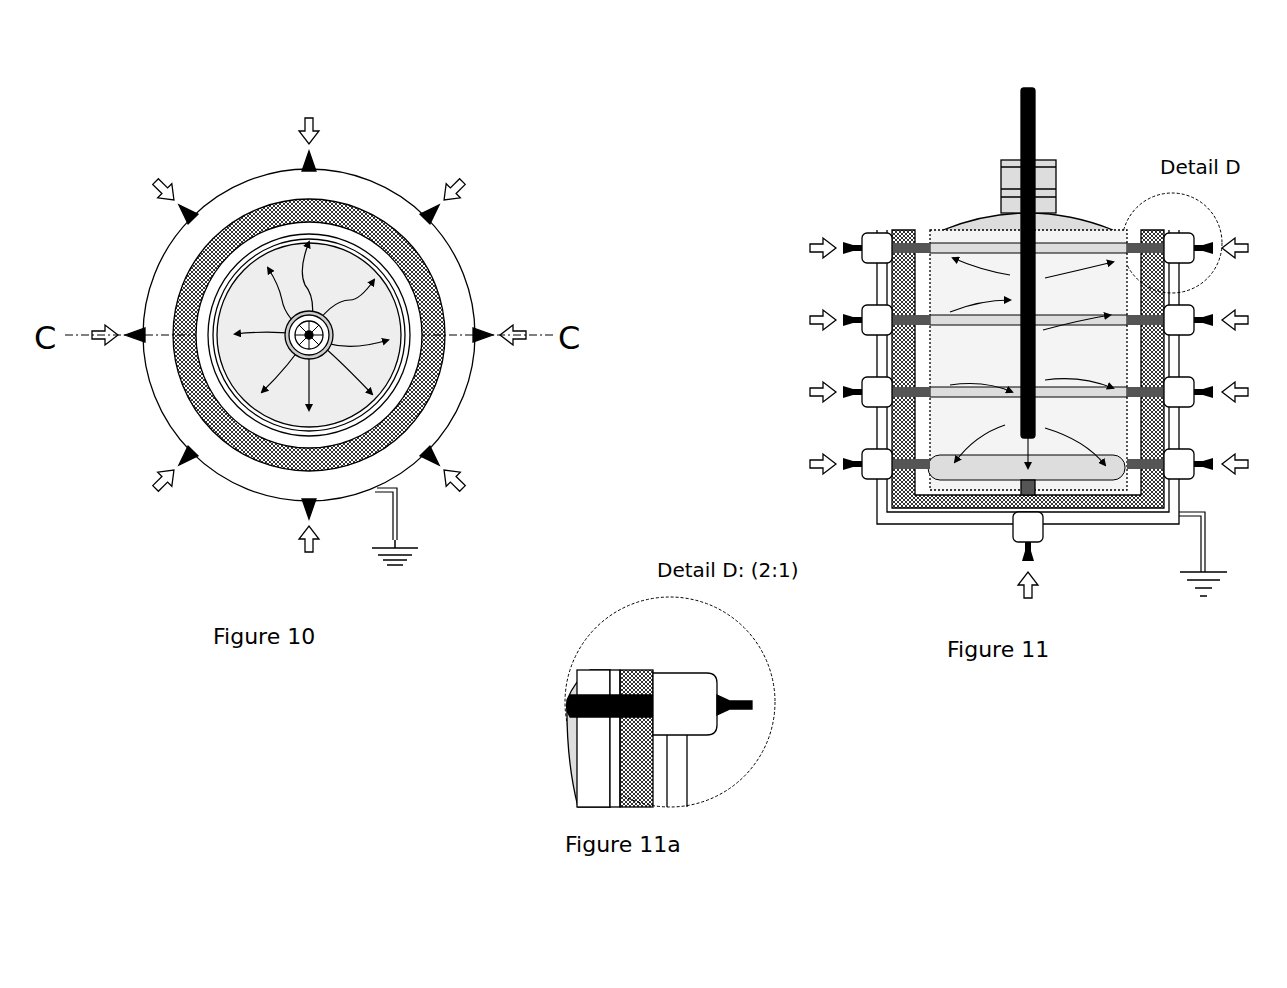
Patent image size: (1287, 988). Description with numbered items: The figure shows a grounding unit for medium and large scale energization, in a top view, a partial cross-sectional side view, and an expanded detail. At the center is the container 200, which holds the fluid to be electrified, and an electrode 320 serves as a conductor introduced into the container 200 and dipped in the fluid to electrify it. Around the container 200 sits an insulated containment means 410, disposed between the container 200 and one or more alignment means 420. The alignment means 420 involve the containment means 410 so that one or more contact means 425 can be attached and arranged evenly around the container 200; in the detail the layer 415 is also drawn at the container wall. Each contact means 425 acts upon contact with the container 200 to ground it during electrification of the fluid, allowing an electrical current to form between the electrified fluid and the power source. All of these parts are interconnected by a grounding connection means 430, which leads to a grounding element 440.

In FIG. 10, the container 200 is at (378, 304).
In FIG. 11, the container 200 is at (1057, 224).
In FIG. 11A, the container 200 is at (569, 697).
In FIG. 11, the electrode 320 is at (1020, 100).
In FIG. 10, the containment means 410 is at (352, 214).
In FIG. 11, the containment means 410 is at (903, 228).
In FIG. 11A, the containment means 410 is at (640, 668).
In FIG. 11A, the vessel wall liner 415 is at (618, 690).
In FIG. 11, the alignment means 420 is at (868, 230).
In FIG. 11A, the alignment means 420 is at (700, 672).
In FIG. 11, the contact means 425 is at (847, 245).
In FIG. 11A, the contact means 425 is at (738, 700).
In FIG. 11, the grounding connection means 430 is at (880, 355).
In FIG. 11A, the grounding connection means 430 is at (689, 763).
In FIG. 10, the grounding element 440 is at (400, 515).
In FIG. 11, the grounding element 440 is at (1207, 540).